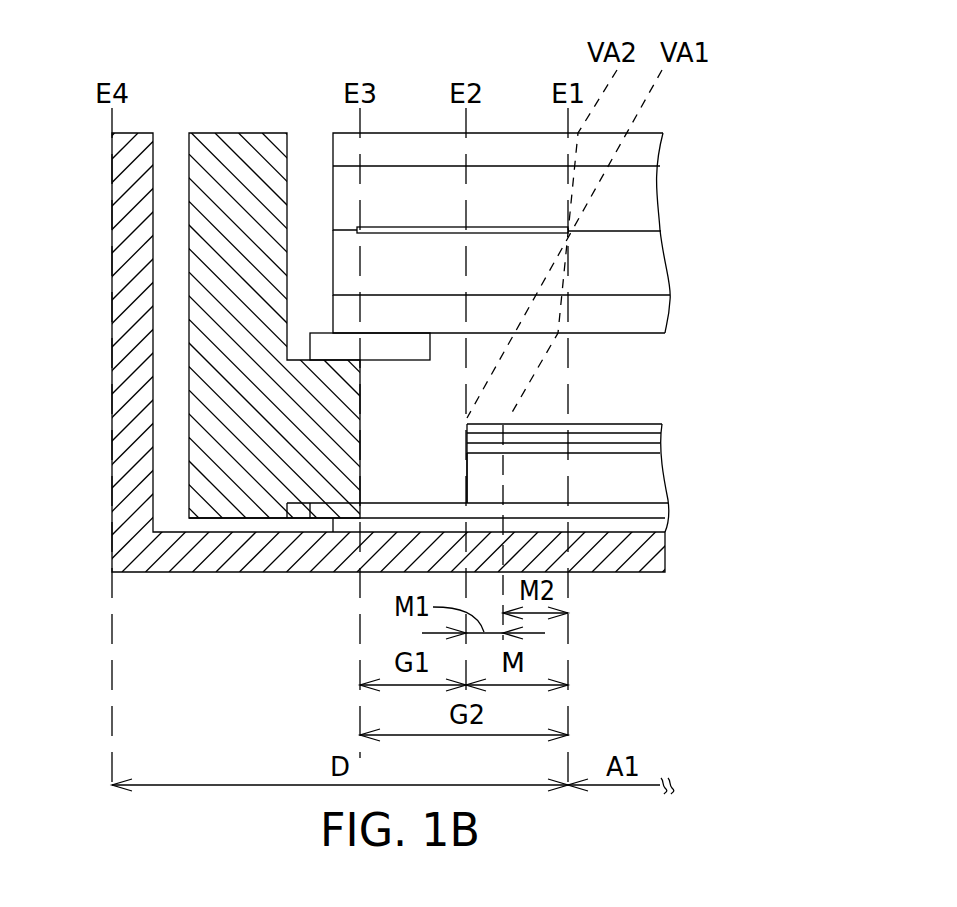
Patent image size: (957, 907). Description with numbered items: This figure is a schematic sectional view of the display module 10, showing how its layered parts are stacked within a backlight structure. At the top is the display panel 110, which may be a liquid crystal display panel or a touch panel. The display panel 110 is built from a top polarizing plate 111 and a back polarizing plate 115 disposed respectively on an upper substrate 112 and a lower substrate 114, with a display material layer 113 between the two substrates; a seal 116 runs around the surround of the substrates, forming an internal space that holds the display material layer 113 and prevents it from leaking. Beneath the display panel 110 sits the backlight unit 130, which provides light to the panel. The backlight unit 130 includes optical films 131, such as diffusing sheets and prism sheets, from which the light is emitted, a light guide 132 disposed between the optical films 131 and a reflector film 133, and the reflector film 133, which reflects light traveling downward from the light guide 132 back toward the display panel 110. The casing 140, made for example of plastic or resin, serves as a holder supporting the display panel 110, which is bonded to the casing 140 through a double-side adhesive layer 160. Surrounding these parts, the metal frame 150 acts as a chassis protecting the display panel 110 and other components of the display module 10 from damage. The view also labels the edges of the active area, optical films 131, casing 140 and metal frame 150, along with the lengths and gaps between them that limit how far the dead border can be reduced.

The display module 10 is at (818, 46).
The display panel 110 is at (577, 233).
The top polarizing plate 111 is at (648, 150).
The upper substrate 112 is at (643, 198).
The display material layer 113 is at (657, 232).
The lower substrate 114 is at (653, 280).
The back polarizing plate 115 is at (543, 314).
The seal 116 is at (560, 243).
The backlight unit 130 is at (554, 488).
The optical film 131 is at (610, 462).
The light guide 132 is at (648, 482).
The reflector film 133 is at (520, 529).
The casing 140 is at (247, 433).
The metal frame 150 is at (127, 483).
The double-side adhesive layer 160 is at (327, 348).